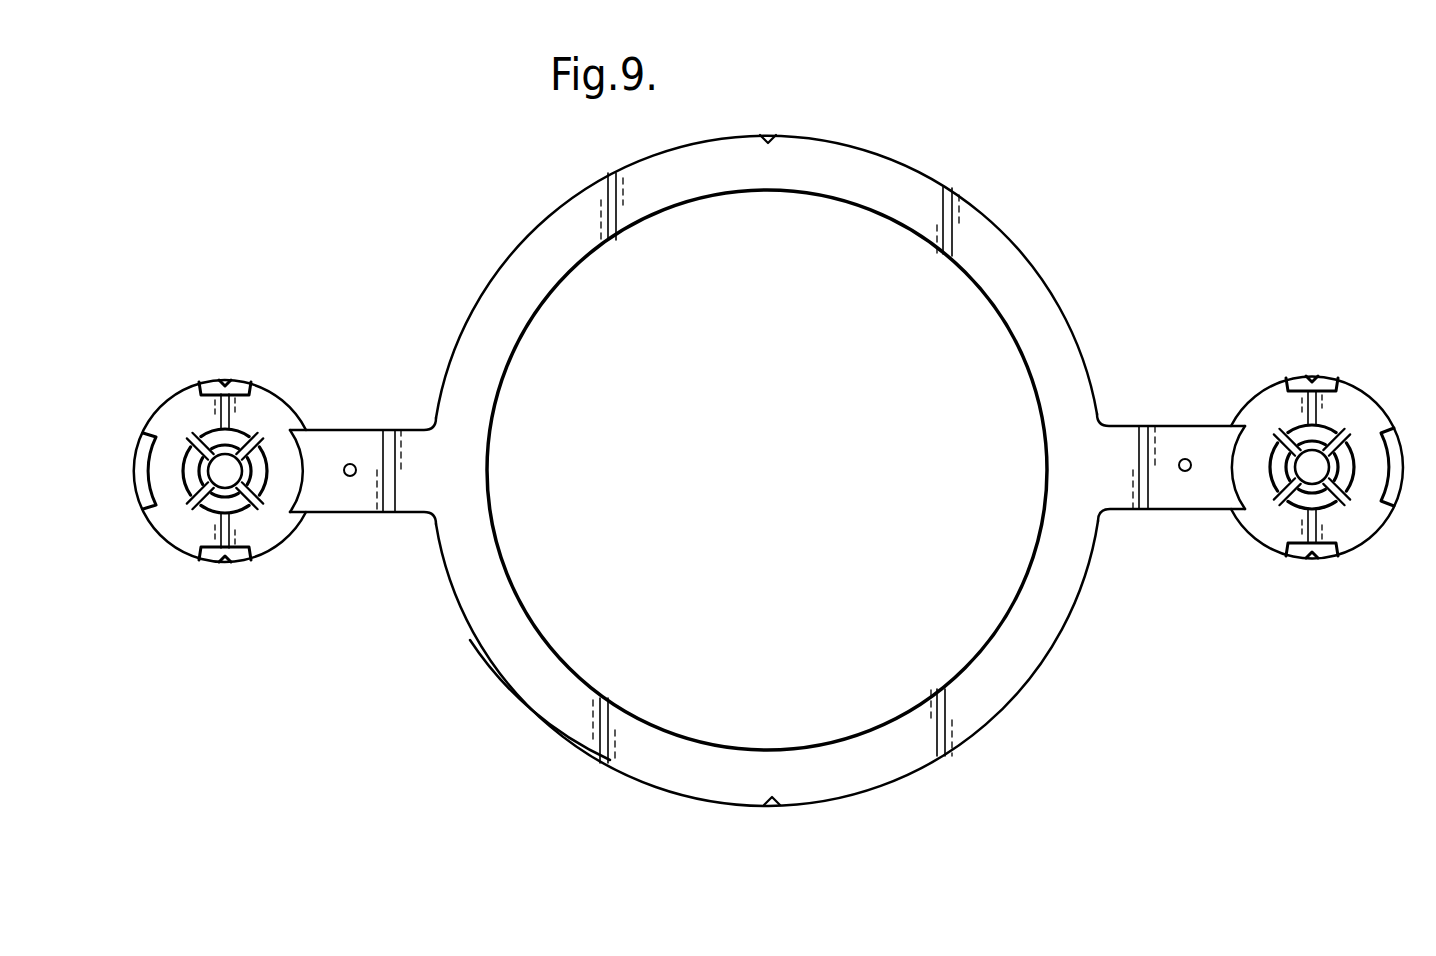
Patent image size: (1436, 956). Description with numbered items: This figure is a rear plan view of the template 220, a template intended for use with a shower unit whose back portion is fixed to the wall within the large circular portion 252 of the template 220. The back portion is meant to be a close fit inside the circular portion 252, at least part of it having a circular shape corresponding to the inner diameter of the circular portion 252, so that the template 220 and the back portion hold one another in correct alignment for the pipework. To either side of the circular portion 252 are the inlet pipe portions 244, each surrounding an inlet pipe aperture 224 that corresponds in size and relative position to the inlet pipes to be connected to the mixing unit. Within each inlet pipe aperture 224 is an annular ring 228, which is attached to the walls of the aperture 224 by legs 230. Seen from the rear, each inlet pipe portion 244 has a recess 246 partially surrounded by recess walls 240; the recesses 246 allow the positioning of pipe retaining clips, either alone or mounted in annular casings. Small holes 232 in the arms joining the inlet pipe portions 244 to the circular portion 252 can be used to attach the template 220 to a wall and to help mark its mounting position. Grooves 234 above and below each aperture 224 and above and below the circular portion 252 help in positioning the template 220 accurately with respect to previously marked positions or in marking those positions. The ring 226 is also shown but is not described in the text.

The template 220 is at (1128, 438).
The inlet pipe apertures 224 is at (1293, 425).
The annular ring 226 is at (555, 288).
The annular rings 228 is at (1322, 487).
The legs 230 is at (1288, 498).
The small holes 232 is at (1183, 472).
The grooves 234 is at (768, 133).
The recess walls 240 is at (212, 555).
The inlet pipe portions 244 is at (295, 400).
The recesses 246 is at (178, 410).
The circular portion 252 is at (532, 672).